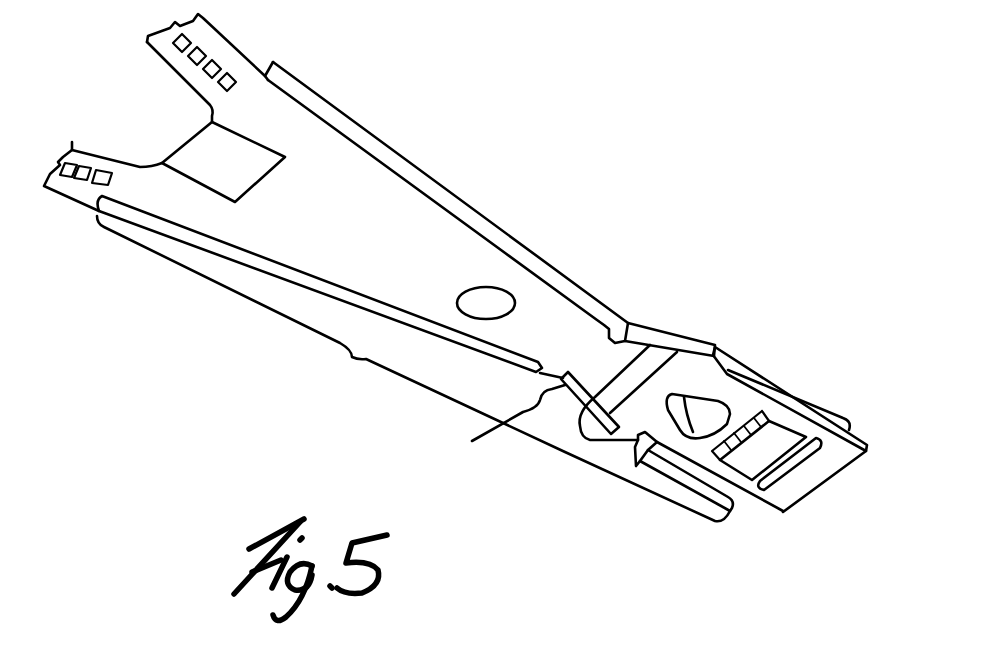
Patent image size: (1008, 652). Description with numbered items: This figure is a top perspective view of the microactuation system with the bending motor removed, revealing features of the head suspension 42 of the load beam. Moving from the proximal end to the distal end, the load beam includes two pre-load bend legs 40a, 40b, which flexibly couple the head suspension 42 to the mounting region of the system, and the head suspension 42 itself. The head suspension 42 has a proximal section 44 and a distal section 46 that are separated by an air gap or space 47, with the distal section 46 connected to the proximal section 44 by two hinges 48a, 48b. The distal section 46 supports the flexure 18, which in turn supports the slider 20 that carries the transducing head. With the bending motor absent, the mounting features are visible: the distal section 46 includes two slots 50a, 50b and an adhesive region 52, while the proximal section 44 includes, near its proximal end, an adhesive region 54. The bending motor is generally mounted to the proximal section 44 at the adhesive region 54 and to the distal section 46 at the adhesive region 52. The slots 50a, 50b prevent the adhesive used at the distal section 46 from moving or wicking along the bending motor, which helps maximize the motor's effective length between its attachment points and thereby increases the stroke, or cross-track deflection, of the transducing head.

The flexure 18 is at (735, 508).
The slider 20 is at (694, 420).
The pre-load bend leg 40a is at (220, 48).
The pre-load bend leg 40b is at (84, 196).
The head suspension 42 is at (413, 368).
The proximal section 44 is at (457, 235).
The distal section 46 is at (848, 452).
The space 47 is at (577, 417).
The hinge 48a is at (692, 338).
The hinge 48b is at (534, 420).
The slot 50a is at (776, 412).
The slot 50b is at (823, 438).
The adhesive region 52 is at (760, 455).
The adhesive region 54 is at (230, 176).